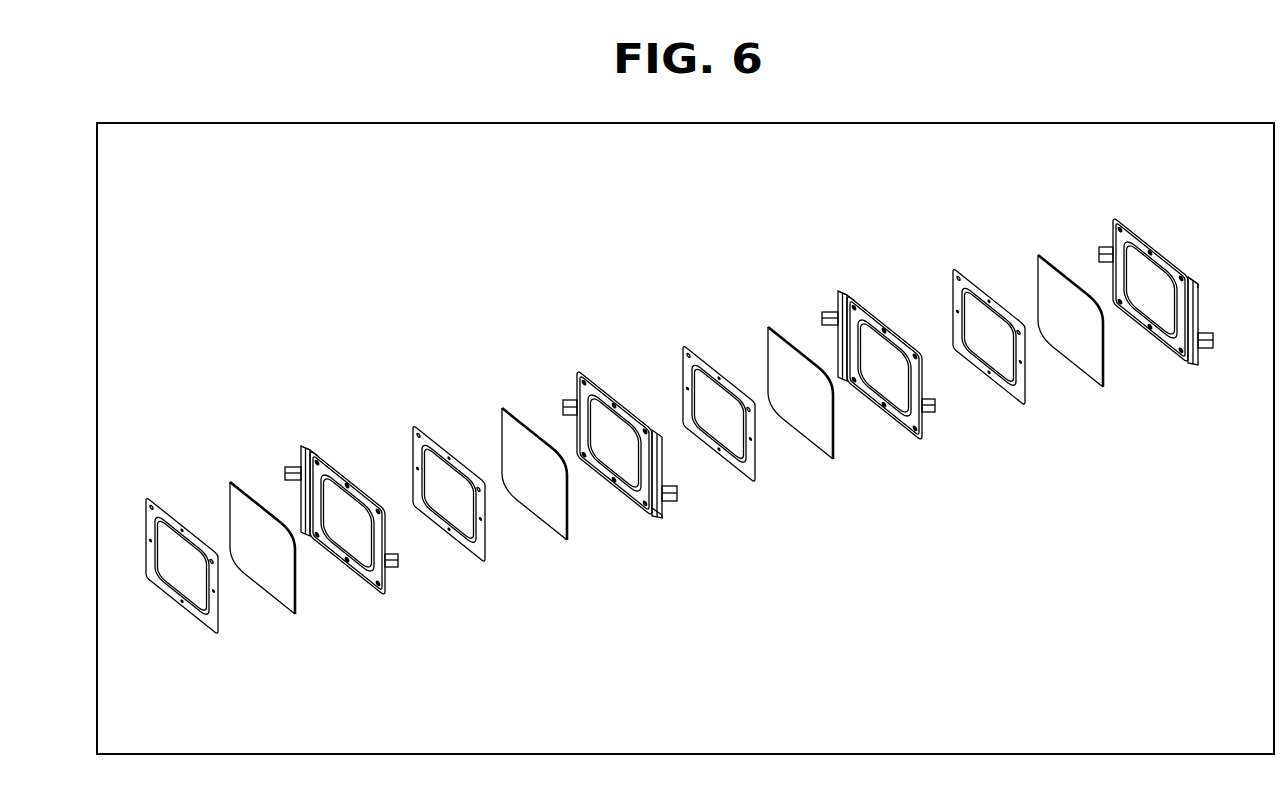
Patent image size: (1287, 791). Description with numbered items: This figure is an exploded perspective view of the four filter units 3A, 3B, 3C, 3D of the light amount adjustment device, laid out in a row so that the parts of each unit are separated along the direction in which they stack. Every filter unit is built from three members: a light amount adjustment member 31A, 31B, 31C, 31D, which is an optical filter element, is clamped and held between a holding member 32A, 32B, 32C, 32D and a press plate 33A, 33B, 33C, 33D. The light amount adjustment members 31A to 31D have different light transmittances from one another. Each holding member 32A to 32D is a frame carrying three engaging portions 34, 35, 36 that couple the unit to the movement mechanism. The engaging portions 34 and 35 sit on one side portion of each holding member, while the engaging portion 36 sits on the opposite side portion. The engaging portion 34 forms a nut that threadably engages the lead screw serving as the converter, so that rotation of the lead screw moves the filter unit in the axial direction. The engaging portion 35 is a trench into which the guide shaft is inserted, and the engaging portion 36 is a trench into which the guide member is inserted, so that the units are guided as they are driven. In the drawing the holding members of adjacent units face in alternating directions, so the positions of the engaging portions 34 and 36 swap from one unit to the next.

The filter unit 3A is at (218, 425).
The filter unit 3B is at (492, 365).
The filter unit 3C is at (748, 305).
The filter unit 3D is at (1022, 235).
The light amount adjustment member 31A is at (290, 612).
The light amount adjustment member 31B is at (558, 538).
The light amount adjustment member 31C is at (828, 464).
The light amount adjustment member 31D is at (1095, 382).
The holding member 32A is at (378, 600).
The holding member 32B is at (626, 518).
The holding member 32C is at (916, 448).
The holding member 32D is at (1183, 367).
The press plate 33A is at (205, 638).
The press plate 33B is at (476, 566).
The press plate 33C is at (743, 487).
The press plate 33D is at (1013, 408).
The engaging portion 34 is at (290, 465).
The engaging portion 35 is at (306, 448).
The engaging portion 36 is at (393, 568).